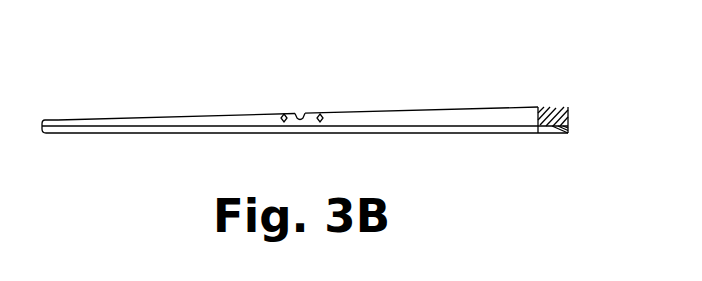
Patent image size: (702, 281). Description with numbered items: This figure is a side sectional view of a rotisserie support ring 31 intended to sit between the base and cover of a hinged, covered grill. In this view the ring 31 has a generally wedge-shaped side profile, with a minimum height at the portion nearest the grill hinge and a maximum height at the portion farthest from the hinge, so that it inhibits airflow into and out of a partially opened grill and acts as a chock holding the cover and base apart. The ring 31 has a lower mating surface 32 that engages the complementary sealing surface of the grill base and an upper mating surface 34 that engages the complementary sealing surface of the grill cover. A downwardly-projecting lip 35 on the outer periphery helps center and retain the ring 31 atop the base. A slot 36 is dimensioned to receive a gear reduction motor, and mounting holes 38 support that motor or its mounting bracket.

The rotisserie support ring 31 is at (561, 71).
The lower mating surface 32 is at (57, 132).
The upper mating surface 34 is at (58, 119).
The downwardly-projecting lip 35 is at (566, 133).
The slot 36 is at (301, 112).
The mounting holes 38 is at (284, 123).